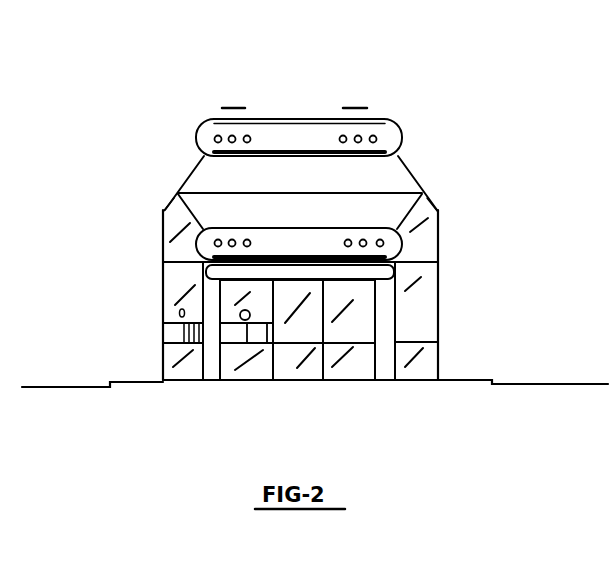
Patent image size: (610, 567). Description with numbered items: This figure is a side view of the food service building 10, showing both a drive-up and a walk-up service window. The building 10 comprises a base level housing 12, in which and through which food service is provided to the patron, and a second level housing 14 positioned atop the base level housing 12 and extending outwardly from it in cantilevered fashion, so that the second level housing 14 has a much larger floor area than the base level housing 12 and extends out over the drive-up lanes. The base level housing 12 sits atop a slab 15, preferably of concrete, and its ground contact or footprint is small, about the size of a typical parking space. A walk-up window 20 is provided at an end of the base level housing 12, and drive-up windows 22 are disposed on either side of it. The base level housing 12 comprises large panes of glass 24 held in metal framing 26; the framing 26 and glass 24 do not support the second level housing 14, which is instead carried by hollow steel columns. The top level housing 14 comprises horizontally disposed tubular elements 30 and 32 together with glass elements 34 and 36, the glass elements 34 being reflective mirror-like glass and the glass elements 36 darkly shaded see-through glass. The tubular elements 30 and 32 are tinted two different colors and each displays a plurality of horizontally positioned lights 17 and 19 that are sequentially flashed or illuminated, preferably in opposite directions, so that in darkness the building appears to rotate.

The building 10 is at (242, 89).
The base level housing 12 is at (465, 309).
The second level housing 14 is at (438, 150).
The slab 15 is at (73, 387).
The lights 17 is at (374, 135).
The lights 19 is at (383, 244).
The walk-up window 20 is at (175, 334).
The drive-up windows 22 is at (235, 337).
The panes of glass 24 is at (173, 288).
The metal framing 26 is at (440, 243).
The tubular element 30 is at (198, 132).
The tubular element 32 is at (175, 230).
The glass elements 34 is at (203, 169).
The glass elements 36 is at (208, 206).